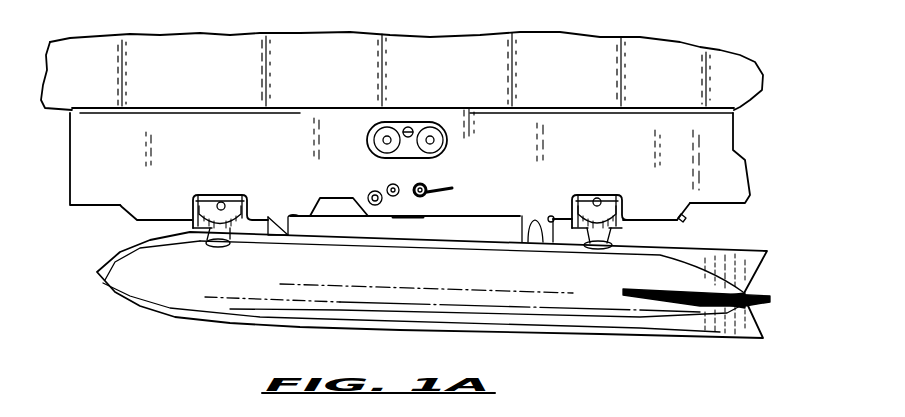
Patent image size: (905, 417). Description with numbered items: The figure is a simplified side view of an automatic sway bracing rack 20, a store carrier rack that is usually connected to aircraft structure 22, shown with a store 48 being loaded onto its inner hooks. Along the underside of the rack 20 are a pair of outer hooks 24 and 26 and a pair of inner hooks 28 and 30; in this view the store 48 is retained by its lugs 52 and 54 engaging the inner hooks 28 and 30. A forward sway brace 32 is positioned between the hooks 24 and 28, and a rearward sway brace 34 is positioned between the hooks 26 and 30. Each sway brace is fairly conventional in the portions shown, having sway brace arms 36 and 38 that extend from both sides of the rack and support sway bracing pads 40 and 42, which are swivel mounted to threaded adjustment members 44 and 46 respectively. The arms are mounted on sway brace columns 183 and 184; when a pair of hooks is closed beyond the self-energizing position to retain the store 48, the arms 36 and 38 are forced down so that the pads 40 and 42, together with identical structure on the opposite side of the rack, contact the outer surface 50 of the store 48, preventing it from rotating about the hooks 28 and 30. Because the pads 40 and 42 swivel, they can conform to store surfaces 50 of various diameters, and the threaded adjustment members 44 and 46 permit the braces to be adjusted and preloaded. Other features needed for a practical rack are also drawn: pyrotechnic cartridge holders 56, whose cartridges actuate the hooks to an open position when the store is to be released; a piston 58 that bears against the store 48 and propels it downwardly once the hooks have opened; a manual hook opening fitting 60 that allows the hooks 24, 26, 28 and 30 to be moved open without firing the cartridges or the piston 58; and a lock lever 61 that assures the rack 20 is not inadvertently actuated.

The automatic sway bracing rack 20 is at (712, 139).
The aircraft structure 22 is at (712, 30).
The outer hook 24 is at (130, 221).
The outer hook 26 is at (702, 219).
The inner hook 28 is at (266, 237).
The inner hook 30 is at (556, 244).
The forward sway brace 32 is at (212, 236).
The rearward sway brace 34 is at (623, 211).
The sway brace arm 36 is at (193, 208).
The sway brace arm 38 is at (580, 241).
The sway bracing pad 40 is at (223, 248).
The sway bracing pad 42 is at (612, 247).
The threaded adjustment member 44 is at (213, 193).
The threaded adjustment member 46 is at (590, 193).
The store 48 is at (467, 331).
The outer surface 50 is at (293, 317).
The lug 52 is at (291, 213).
The lug 54 is at (522, 215).
The pyrotechnic cartridge holder 56 is at (392, 124).
The piston 58 is at (412, 218).
The manual hook opening fitting 60 is at (390, 184).
The lock lever 61 is at (450, 188).
The sway brace column 183 is at (236, 193).
The sway brace column 184 is at (615, 193).